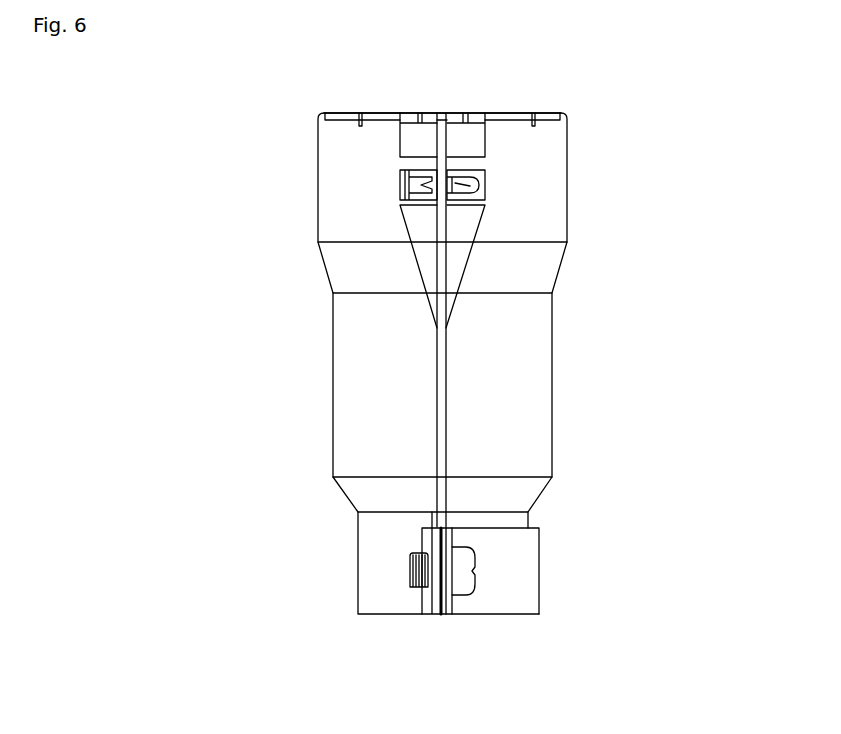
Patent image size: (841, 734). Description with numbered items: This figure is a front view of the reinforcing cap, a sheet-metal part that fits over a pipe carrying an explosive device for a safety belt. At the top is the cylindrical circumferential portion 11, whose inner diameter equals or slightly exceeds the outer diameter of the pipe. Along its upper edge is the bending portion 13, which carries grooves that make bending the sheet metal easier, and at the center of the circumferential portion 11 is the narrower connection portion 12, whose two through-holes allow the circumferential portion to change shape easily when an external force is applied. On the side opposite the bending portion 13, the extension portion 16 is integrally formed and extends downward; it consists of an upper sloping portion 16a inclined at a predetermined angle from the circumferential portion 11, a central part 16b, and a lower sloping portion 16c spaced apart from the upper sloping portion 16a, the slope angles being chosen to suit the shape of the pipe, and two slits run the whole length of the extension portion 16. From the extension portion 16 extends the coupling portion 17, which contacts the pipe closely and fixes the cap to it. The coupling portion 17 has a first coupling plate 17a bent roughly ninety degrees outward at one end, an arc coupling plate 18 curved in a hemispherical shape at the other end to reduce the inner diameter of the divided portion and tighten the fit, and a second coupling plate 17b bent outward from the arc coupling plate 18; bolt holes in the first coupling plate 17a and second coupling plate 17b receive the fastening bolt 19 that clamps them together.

The circumferential portion 11 is at (542, 177).
The connection portion 12 is at (425, 182).
The bending portion 13 is at (523, 110).
The extension portion 16 is at (520, 377).
The upper sloping portion 16a is at (527, 268).
The central part 16b is at (527, 383).
The lower sloping portion 16c is at (499, 494).
The coupling portion 17 is at (513, 519).
The first coupling plate 17a is at (435, 540).
The second coupling plate 17b is at (447, 602).
The arc coupling plate 18 is at (530, 578).
The fastening bolt 19 is at (413, 587).